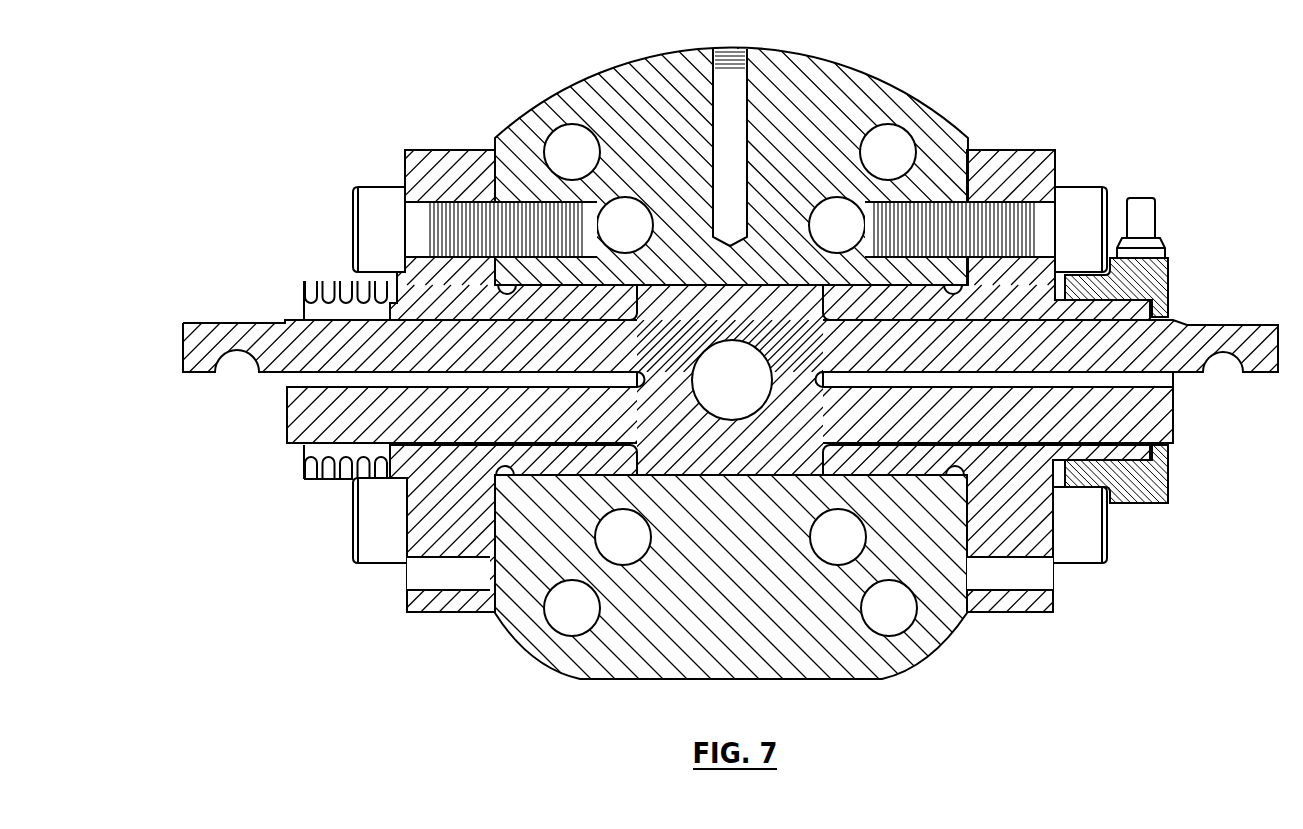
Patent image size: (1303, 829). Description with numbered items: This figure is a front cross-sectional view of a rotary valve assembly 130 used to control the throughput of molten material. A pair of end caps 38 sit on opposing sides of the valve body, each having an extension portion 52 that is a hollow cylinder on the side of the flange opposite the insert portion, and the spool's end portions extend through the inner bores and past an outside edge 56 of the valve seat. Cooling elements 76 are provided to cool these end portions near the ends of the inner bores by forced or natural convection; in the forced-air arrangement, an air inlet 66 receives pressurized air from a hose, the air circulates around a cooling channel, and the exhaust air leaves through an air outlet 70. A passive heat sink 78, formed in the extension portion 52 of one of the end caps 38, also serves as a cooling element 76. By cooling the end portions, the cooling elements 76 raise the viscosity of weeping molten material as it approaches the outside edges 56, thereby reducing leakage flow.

The end cap 38 is at (413, 162).
The heat sink 78 is at (322, 283).
The outside edge 56 is at (288, 320).
The extension portion 52 is at (312, 427).
The coupling assembly 130 is at (325, 605).
The air outlet 70 is at (1153, 212).
The air inlet 66 is at (1131, 497).
The cooling element 76 is at (1163, 603).